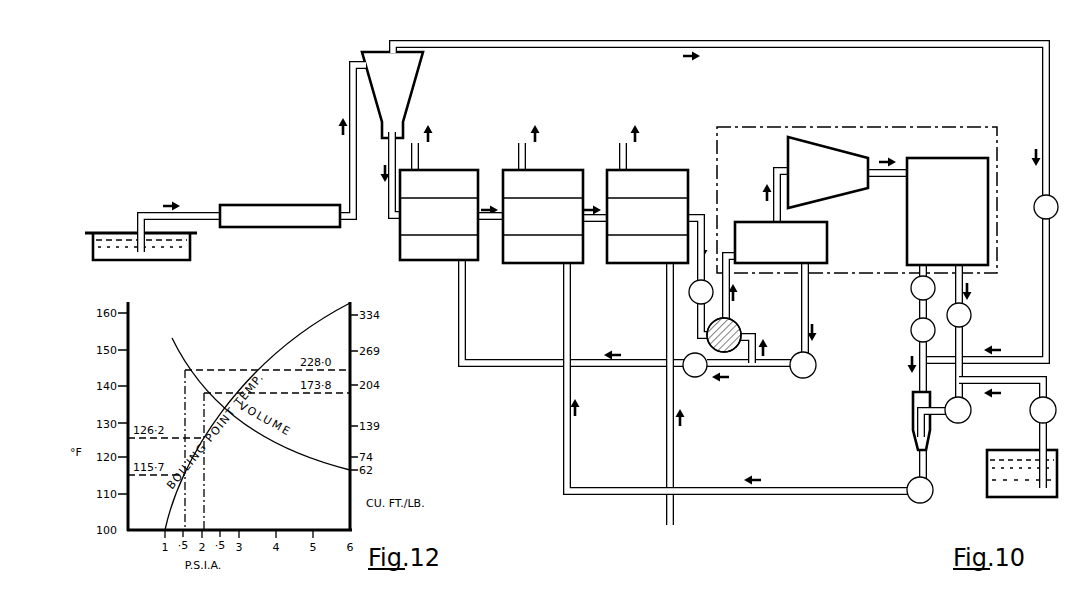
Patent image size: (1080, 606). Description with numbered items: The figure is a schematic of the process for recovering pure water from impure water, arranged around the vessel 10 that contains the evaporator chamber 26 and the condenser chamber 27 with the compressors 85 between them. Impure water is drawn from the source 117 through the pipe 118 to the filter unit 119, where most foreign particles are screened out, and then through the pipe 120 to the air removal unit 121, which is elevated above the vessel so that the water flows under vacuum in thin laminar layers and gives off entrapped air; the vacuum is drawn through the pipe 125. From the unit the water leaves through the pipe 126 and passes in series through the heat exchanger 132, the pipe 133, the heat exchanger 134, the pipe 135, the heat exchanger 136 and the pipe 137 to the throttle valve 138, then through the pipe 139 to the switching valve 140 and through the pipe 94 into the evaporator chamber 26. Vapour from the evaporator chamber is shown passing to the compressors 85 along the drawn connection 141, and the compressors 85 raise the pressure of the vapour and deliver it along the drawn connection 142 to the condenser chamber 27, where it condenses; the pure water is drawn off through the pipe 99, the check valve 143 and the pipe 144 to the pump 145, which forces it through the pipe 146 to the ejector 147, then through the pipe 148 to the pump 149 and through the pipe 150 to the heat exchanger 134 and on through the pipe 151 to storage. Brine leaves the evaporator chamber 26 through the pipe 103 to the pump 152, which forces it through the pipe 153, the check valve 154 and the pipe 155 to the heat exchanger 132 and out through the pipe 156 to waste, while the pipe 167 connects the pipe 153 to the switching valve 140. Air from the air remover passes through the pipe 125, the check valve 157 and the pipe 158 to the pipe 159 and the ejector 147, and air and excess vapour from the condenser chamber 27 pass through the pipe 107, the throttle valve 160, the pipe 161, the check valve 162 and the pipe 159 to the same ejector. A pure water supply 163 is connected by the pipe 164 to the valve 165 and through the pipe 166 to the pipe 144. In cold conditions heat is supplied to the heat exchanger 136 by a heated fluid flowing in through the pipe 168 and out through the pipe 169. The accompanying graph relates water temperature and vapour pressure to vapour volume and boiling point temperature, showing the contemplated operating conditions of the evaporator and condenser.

The vessel 10 is at (879, 130).
The evaporator chamber 26 is at (828, 234).
The condenser chamber 27 is at (947, 201).
The compressors 85 is at (846, 196).
The pipe 94 is at (731, 276).
The pipe 99 is at (969, 302).
The pipe 103 is at (810, 301).
The pipe 107 is at (912, 278).
The source 117 is at (121, 230).
The pipe 118 is at (208, 212).
The filter unit 119 is at (290, 204).
The pipe 120 is at (349, 176).
The air removal unit 121 is at (416, 78).
The pipe 125 is at (504, 46).
The pipe 126 is at (388, 214).
The heat exchanger 132 is at (436, 171).
The pipe 133 is at (487, 222).
The heat exchanger 134 is at (533, 171).
The pipe 135 is at (590, 225).
The heat exchanger 136 is at (637, 171).
The pipe 137 is at (706, 224).
The throttle valve 138 is at (689, 297).
The pipe 139 is at (697, 318).
The switching valve 140 is at (736, 322).
The conduit 141 is at (770, 180).
The conduit 142 is at (887, 184).
The check valve 143 is at (971, 321).
The pipe 144 is at (963, 346).
The pump 145 is at (968, 418).
The pipe 146 is at (941, 429).
The ejector 147 is at (912, 422).
The pipe 148 is at (918, 466).
The pump 149 is at (929, 483).
The pipe 150 is at (776, 489).
The pipe 151 is at (518, 156).
The pump 152 is at (813, 375).
The pipe 153 is at (755, 370).
The check valve 154 is at (698, 376).
The pipe 155 is at (605, 368).
The pipe 156 is at (420, 152).
The check valve 157 is at (1037, 217).
The pipe 158 is at (1043, 285).
The pipe 159 is at (920, 384).
The throttle valve 160 is at (911, 294).
The pipe 161 is at (918, 311).
The check valve 162 is at (911, 331).
The pure water supply 163 is at (987, 463).
The pipe 164 is at (1037, 439).
The valve 165 is at (1035, 420).
The pipe 166 is at (1027, 410).
The pipe 167 is at (748, 332).
The pipe 168 is at (675, 451).
The pipe 169 is at (620, 156).